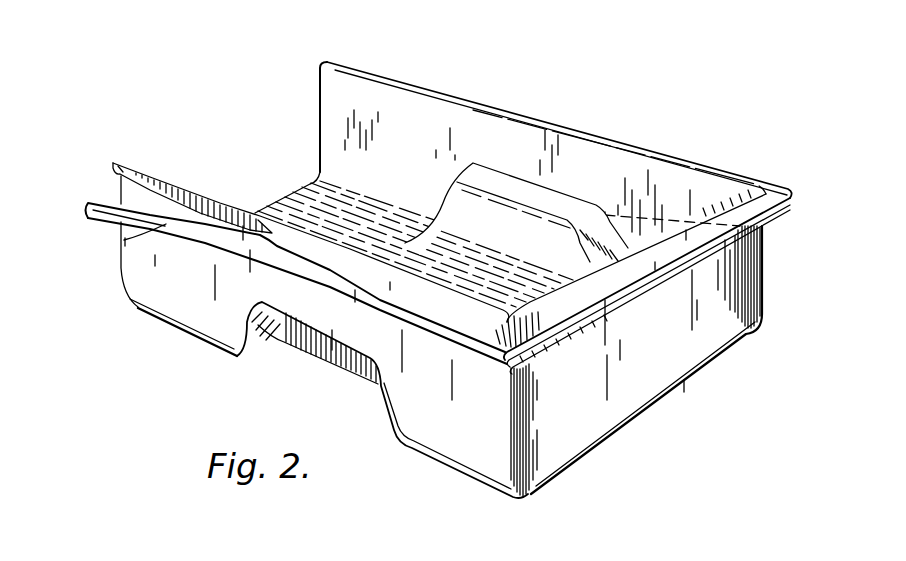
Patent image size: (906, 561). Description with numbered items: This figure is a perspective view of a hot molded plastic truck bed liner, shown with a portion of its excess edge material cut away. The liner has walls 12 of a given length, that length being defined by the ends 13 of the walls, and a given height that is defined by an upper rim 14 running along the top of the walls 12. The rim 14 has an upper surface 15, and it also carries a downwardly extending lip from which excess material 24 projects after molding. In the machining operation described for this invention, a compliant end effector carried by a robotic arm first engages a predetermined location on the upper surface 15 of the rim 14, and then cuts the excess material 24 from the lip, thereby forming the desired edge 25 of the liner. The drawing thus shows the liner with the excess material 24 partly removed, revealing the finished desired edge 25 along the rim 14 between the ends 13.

The walls 12 is at (577, 155).
The ends 13 is at (317, 77).
The upper rim 14 is at (445, 90).
The upper surface 15 is at (235, 208).
The excess material 24 is at (123, 245).
The desired edge 25 is at (115, 173).